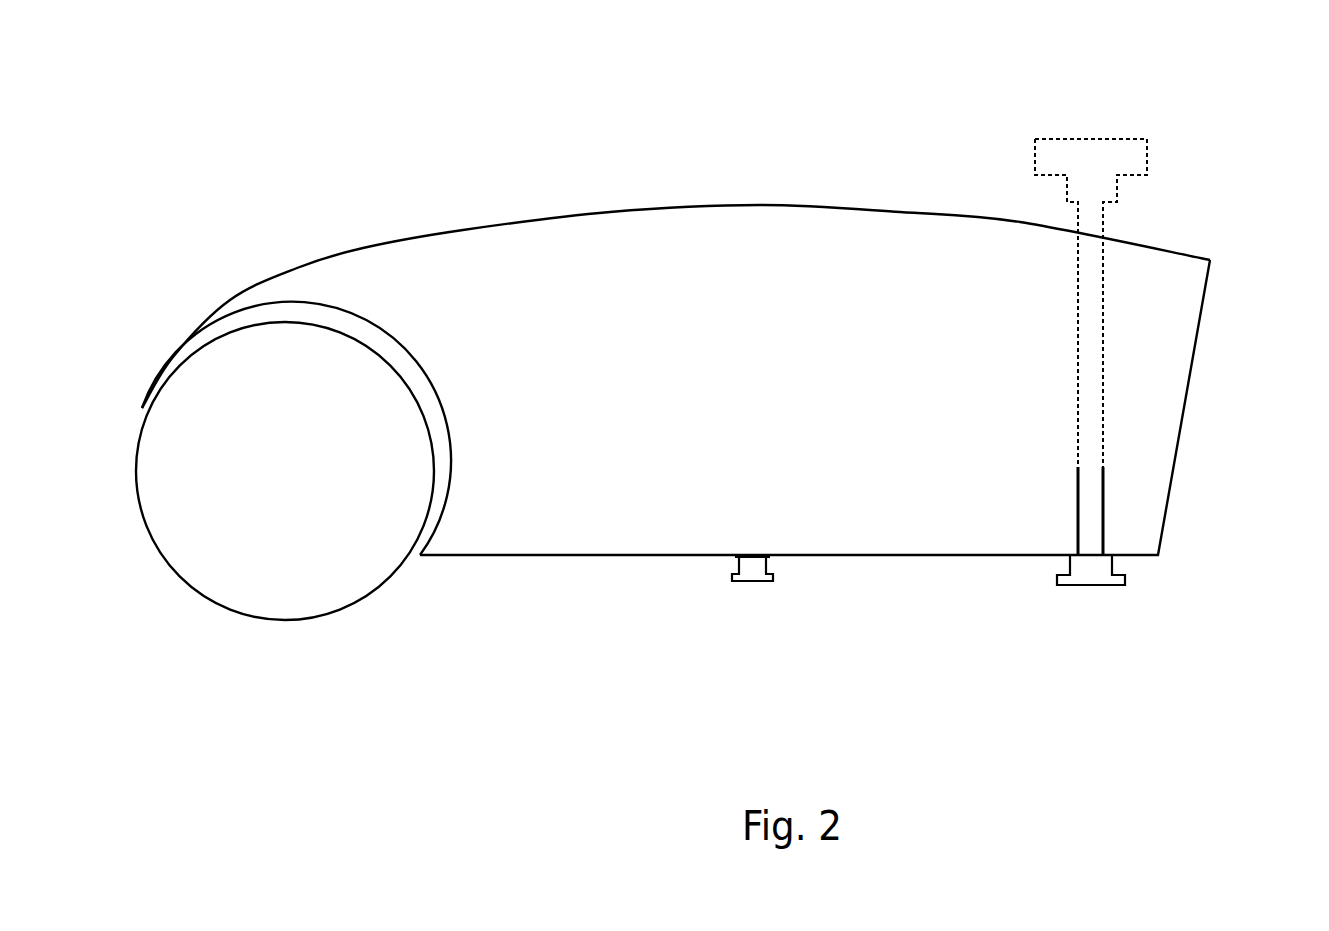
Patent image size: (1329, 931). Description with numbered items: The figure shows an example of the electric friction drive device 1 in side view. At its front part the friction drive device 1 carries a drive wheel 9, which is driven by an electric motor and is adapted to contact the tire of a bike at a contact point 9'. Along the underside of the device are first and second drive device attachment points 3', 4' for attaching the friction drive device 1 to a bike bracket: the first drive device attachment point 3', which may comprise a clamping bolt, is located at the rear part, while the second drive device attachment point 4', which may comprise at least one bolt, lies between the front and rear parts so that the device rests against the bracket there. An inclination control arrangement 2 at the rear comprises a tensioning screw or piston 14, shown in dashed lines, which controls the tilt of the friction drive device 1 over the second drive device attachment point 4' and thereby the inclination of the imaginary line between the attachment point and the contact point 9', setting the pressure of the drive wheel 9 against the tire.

The electric friction drive device 1 is at (578, 173).
The inclination control arrangement 2 is at (1098, 502).
The first drive device attachment point 3' is at (1042, 637).
The second drive device attachment point 4' is at (694, 638).
The drive wheel 9 is at (285, 471).
The contact point 9' is at (364, 706).
The tensioning screw or piston 14 is at (1082, 157).